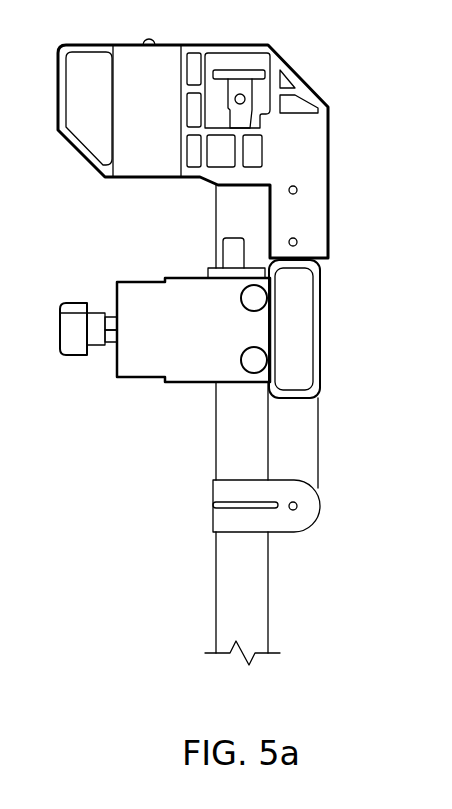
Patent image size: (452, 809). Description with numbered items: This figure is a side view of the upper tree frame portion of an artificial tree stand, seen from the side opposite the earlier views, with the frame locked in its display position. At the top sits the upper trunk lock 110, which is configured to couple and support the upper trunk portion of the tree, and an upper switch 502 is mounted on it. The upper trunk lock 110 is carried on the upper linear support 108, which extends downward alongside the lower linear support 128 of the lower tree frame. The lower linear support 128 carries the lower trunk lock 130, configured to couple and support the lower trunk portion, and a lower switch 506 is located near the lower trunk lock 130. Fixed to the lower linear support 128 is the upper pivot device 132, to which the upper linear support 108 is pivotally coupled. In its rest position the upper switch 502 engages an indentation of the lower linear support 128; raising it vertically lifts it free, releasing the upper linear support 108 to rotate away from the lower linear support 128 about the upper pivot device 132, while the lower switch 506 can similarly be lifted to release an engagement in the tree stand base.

The upper linear support 108 is at (318, 455).
The upper trunk lock 110 is at (305, 78).
The lower linear support 128 is at (215, 456).
The lower trunk lock 130 is at (117, 287).
The upper pivot device 132 is at (212, 518).
The upper switch 502 is at (248, 70).
The lower switch 506 is at (208, 268).